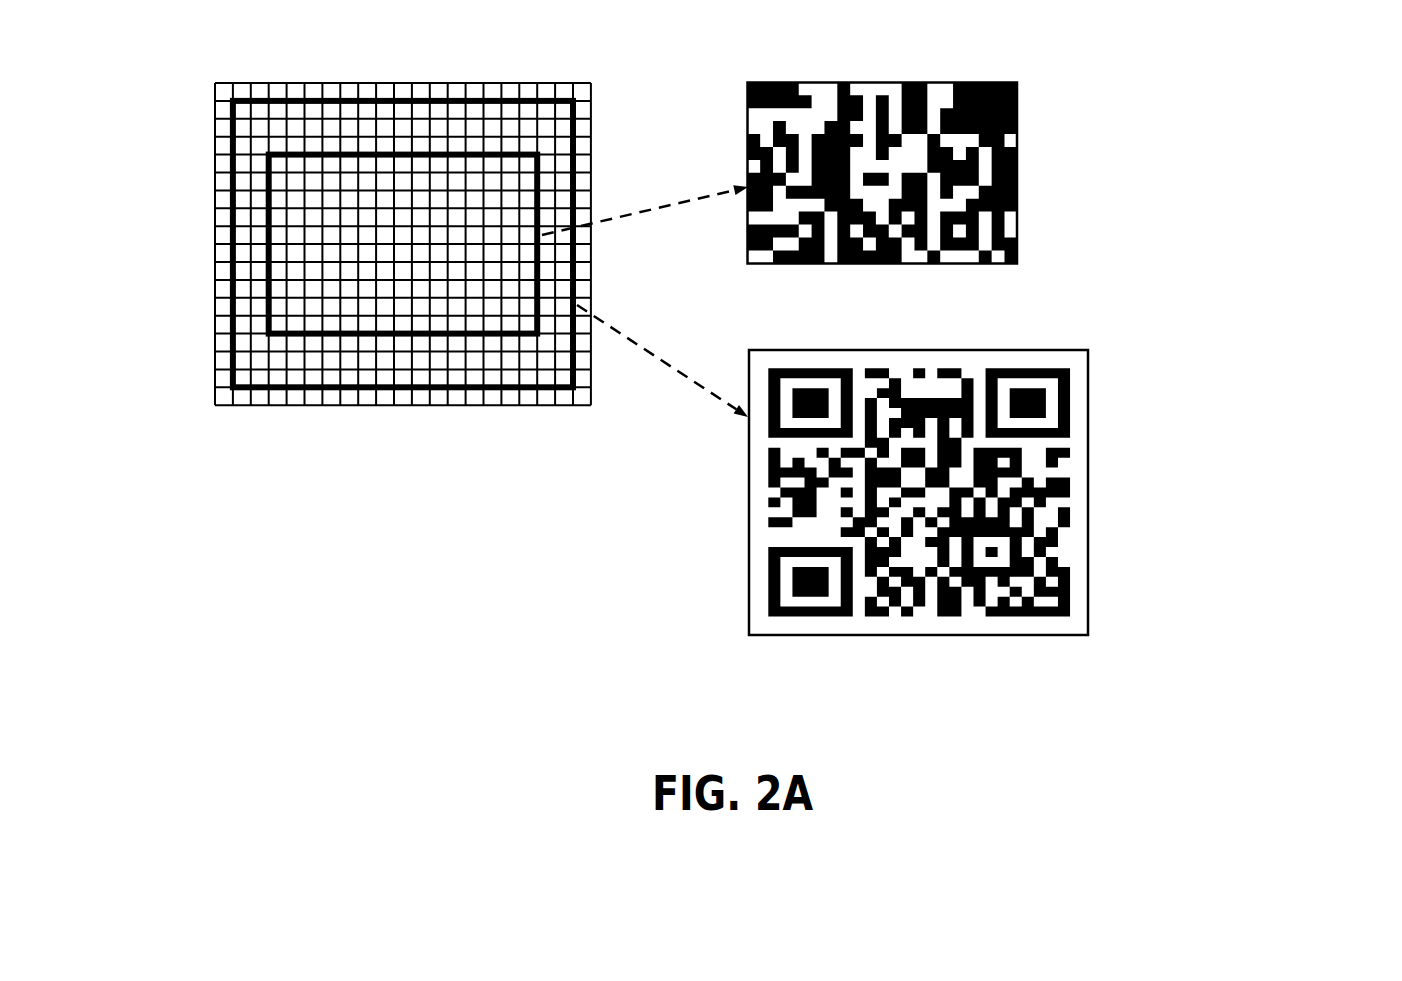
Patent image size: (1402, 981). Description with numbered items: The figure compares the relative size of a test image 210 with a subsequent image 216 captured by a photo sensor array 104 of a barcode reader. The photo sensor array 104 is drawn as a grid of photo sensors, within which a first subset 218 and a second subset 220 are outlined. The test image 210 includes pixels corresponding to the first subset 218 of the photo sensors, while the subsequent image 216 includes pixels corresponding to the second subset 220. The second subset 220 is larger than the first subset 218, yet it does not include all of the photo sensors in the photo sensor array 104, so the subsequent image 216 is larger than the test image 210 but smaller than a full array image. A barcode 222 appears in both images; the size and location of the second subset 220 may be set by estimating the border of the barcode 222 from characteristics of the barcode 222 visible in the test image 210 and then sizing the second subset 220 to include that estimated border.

The photo sensor array 104 is at (405, 407).
The first subset 218 is at (266, 240).
The second subset 220 is at (236, 342).
The test image 210 is at (1017, 158).
The subsequent image 216 is at (1088, 515).
The barcode 222 is at (822, 103).